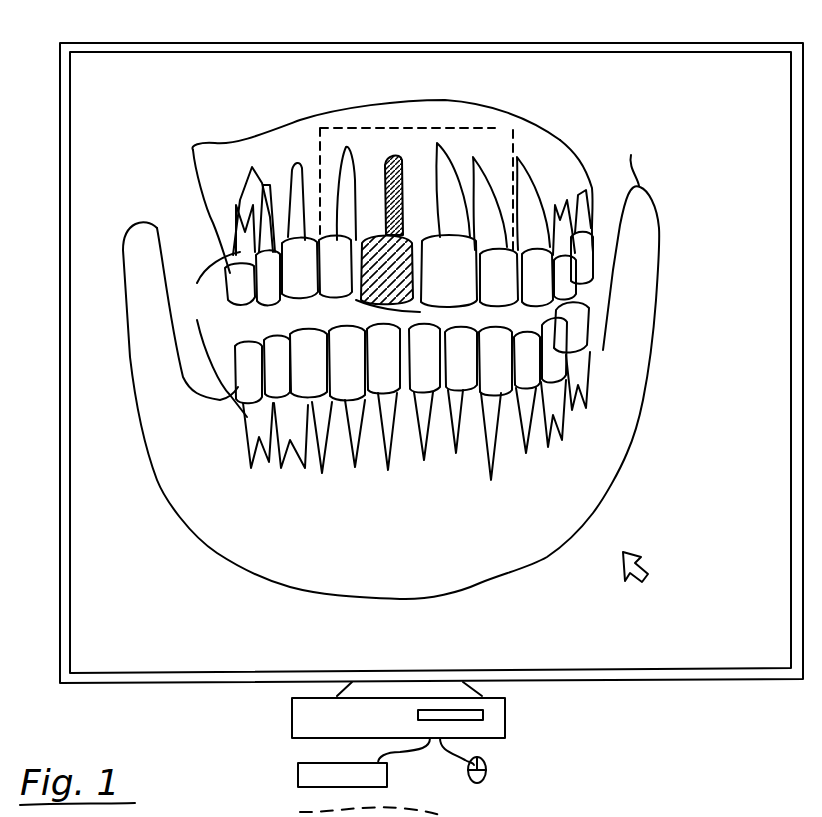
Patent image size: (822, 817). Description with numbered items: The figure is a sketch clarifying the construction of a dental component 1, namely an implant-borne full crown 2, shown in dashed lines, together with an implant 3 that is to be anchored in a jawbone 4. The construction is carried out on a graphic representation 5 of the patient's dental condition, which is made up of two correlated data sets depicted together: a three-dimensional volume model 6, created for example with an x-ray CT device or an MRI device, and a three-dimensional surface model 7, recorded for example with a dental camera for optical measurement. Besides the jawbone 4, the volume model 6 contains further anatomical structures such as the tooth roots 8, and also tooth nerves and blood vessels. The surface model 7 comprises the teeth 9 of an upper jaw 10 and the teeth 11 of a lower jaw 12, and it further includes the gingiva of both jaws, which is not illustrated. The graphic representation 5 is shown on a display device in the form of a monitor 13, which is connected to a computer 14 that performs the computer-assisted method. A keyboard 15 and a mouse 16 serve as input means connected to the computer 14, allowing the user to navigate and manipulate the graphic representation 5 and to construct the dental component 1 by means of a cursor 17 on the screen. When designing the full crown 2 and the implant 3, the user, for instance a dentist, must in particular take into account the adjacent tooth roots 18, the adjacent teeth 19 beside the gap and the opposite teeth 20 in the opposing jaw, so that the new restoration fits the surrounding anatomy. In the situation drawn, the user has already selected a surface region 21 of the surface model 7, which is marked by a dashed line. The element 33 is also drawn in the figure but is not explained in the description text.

The dental component 1 is at (400, 242).
The implant-borne full crown 2 is at (353, 302).
The implant 3 is at (402, 175).
The jawbone 4 is at (530, 139).
The graphic representation 5 is at (590, 176).
The 3D volume model 6 is at (206, 282).
The 3D surface model 7 is at (238, 346).
The tooth roots 8 is at (252, 170).
The teeth of the upper jaw 9 is at (592, 234).
The upper jaw 10 is at (563, 178).
The teeth of the lower jaw 11 is at (577, 327).
The lower jaw 12 is at (597, 357).
The monitor 13 is at (518, 44).
The computer 14 is at (508, 720).
The keyboard 15 is at (297, 772).
The mouse 16 is at (487, 771).
The cursor 17 is at (647, 561).
The adjacent tooth roots 18 is at (446, 200).
The adjacent teeth 19 is at (337, 267).
The opposite teeth 20 is at (420, 362).
The surface region 21 is at (490, 128).
The connection line 33 is at (555, 816).